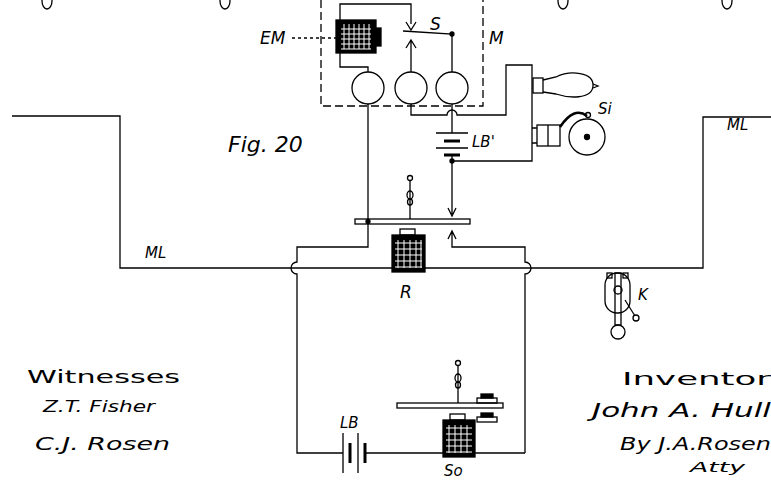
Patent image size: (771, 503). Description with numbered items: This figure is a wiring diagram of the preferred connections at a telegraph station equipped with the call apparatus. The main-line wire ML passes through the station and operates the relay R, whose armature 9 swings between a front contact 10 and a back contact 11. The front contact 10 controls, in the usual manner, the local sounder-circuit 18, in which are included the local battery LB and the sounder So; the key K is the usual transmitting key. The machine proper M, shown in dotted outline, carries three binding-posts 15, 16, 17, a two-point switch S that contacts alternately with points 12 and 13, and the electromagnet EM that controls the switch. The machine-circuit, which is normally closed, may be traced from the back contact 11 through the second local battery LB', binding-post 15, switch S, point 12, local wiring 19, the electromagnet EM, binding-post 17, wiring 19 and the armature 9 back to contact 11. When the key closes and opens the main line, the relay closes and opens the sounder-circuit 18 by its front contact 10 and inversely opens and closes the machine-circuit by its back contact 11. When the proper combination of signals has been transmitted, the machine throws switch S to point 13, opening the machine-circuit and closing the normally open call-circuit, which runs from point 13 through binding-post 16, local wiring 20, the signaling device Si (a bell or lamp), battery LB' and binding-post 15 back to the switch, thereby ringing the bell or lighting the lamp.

The armature 9 is at (412, 200).
The front contact 10 is at (458, 236).
The back contact 11 is at (458, 215).
The switch point 12 is at (413, 26).
The switch point 13 is at (417, 49).
The binding-post 15 is at (452, 88).
The binding-post 16 is at (411, 88).
The binding-post 17 is at (368, 88).
The local sounder-circuit 18 is at (408, 338).
The local wiring 19 is at (375, 110).
The local wiring 20 is at (465, 123).